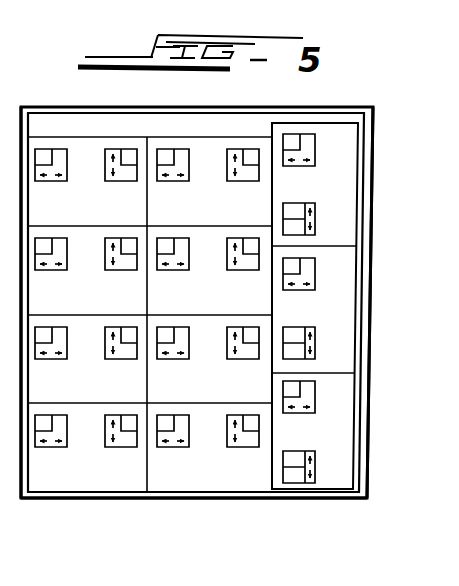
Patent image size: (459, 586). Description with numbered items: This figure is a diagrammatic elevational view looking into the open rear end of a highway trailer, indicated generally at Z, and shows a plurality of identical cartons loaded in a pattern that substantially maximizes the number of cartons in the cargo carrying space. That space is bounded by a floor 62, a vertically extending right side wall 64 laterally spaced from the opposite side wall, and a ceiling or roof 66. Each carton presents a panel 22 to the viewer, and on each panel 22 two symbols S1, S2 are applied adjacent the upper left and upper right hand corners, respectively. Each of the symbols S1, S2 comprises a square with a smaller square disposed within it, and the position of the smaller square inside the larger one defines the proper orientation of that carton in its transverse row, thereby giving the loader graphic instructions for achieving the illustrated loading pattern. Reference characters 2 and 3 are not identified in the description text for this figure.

The keyboard assembly 2 is at (44, 105).
The housing side wall 3 is at (21, 341).
The panel 22 is at (101, 201).
The floor 62 is at (182, 500).
The right side wall 64 is at (366, 354).
The ceiling or roof 66 is at (318, 113).
The symbol S1 is at (52, 185).
The symbol S2 is at (127, 185).